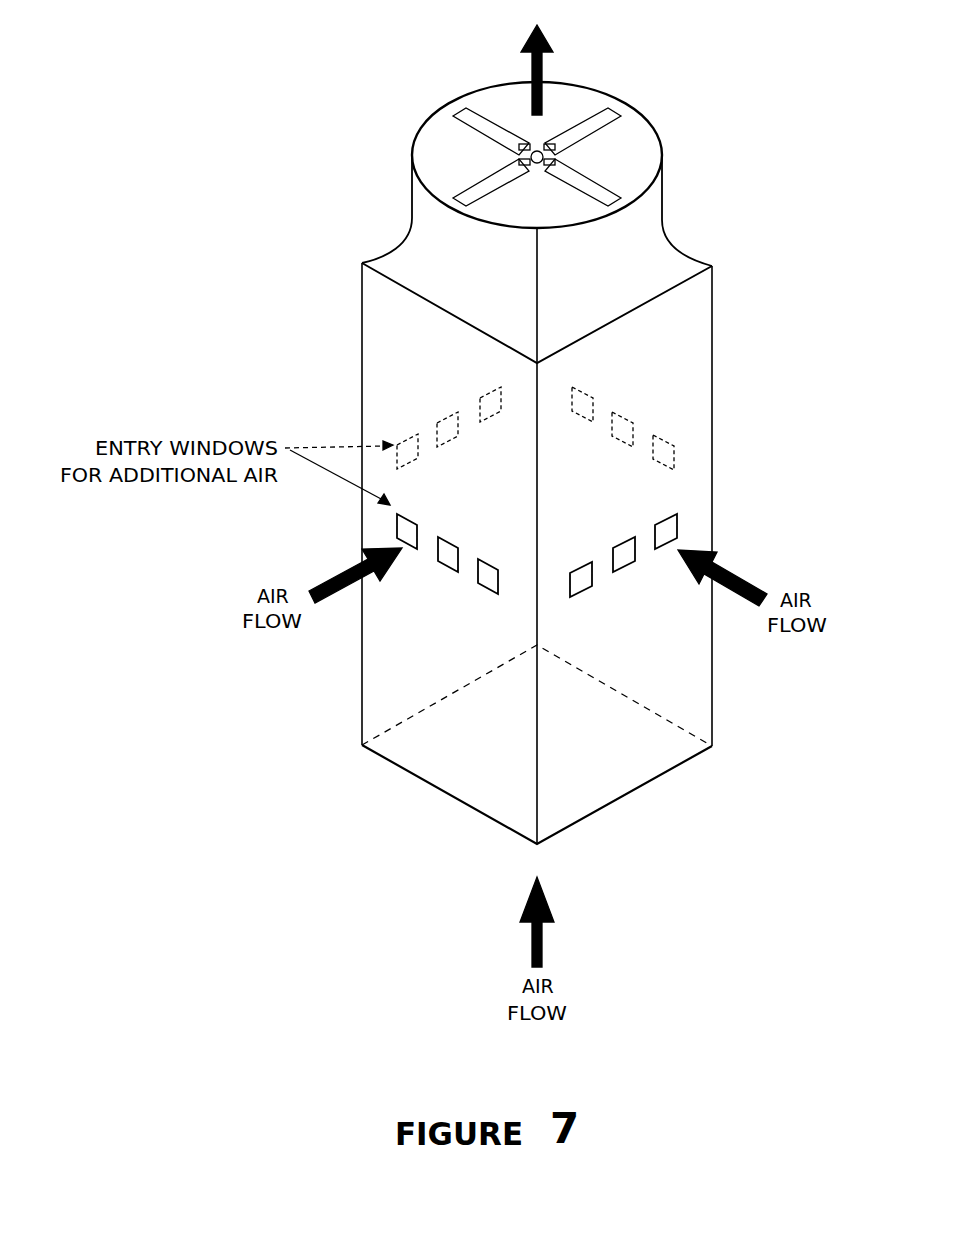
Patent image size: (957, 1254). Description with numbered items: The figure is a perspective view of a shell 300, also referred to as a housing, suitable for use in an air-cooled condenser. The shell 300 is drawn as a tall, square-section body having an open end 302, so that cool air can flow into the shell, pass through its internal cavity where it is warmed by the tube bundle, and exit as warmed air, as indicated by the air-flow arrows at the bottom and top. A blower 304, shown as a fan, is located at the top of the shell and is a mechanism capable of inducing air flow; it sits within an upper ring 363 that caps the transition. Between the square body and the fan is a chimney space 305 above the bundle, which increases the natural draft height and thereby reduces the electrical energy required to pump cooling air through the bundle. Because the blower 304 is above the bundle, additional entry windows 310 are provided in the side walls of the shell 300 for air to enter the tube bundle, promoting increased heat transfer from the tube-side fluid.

The shell 300 is at (553, 434).
The open top end 302 is at (633, 793).
The blower 304 is at (585, 125).
The chimney space 305 is at (632, 230).
The top outlet ring 363 is at (640, 128).
The entry windows 310 is at (443, 567).